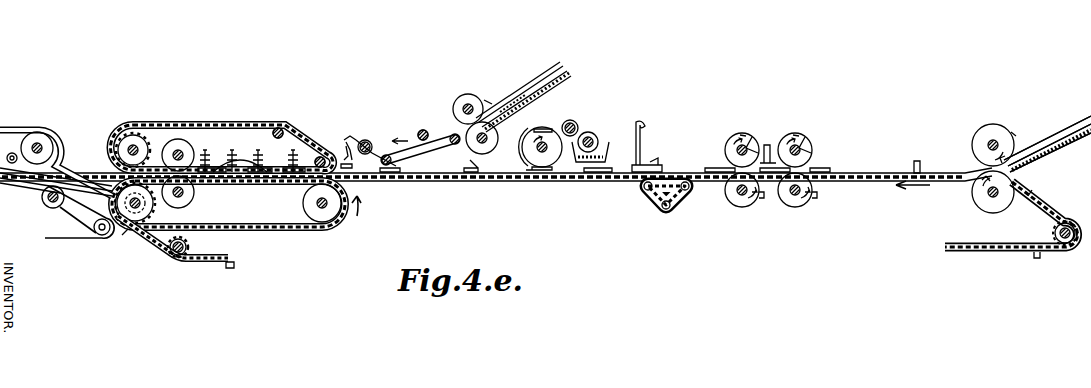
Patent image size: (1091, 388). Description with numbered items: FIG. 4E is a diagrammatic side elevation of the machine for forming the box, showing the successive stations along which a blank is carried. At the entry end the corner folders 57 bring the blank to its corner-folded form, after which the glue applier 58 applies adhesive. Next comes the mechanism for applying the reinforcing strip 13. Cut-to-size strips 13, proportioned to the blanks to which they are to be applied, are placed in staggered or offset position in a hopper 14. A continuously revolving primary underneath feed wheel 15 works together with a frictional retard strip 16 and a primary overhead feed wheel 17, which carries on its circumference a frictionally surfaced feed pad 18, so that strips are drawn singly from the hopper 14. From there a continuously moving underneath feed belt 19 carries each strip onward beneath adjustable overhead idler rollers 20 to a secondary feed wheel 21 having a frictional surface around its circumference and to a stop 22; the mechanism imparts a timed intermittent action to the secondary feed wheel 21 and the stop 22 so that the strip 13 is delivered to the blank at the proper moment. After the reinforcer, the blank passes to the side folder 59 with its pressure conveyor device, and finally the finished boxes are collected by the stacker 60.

The strip 13 is at (555, 63).
The hopper 14 is at (568, 80).
The primary underneath feed wheel 15 is at (490, 152).
The frictional retard strip 16 is at (520, 105).
The primary overhead feed wheel 17 is at (470, 92).
The feed pad 18 is at (488, 103).
The underneath feed belt 19 is at (436, 146).
The overhead idler rollers 20 is at (397, 140).
The secondary feed wheel 21 is at (370, 141).
The stop 22 is at (344, 150).
The corner folders 57 is at (825, 216).
The glue applier 58 is at (610, 188).
The side folder 59 is at (360, 264).
The stacker 60 is at (118, 238).